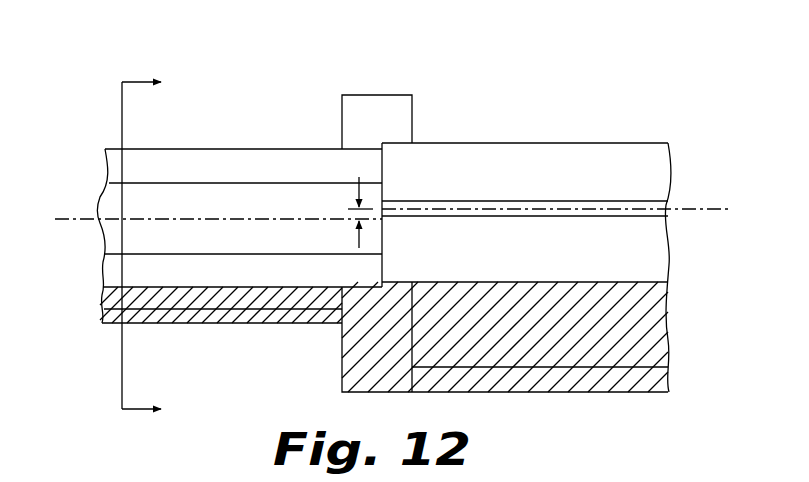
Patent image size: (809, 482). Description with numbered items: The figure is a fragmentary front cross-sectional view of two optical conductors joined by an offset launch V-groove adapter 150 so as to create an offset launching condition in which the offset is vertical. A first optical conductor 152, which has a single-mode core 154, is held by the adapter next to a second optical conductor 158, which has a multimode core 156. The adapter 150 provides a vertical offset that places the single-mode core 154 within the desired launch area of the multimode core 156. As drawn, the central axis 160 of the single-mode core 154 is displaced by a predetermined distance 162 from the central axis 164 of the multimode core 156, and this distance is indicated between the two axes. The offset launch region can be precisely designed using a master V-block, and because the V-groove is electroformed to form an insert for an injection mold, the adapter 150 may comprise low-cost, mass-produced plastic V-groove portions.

The offset launch V-groove adapter 150 is at (454, 56).
The first optical conductor 152 is at (532, 143).
The single-mode core 154 is at (472, 201).
The multimode core 156 is at (173, 183).
The second optical conductor 158 is at (265, 149).
The central axis of core 154 160 is at (703, 210).
The predetermined distance 162 is at (348, 208).
The central axis of core 156 164 is at (65, 218).